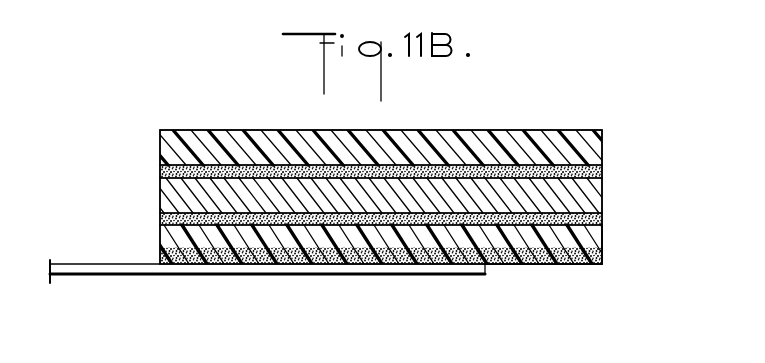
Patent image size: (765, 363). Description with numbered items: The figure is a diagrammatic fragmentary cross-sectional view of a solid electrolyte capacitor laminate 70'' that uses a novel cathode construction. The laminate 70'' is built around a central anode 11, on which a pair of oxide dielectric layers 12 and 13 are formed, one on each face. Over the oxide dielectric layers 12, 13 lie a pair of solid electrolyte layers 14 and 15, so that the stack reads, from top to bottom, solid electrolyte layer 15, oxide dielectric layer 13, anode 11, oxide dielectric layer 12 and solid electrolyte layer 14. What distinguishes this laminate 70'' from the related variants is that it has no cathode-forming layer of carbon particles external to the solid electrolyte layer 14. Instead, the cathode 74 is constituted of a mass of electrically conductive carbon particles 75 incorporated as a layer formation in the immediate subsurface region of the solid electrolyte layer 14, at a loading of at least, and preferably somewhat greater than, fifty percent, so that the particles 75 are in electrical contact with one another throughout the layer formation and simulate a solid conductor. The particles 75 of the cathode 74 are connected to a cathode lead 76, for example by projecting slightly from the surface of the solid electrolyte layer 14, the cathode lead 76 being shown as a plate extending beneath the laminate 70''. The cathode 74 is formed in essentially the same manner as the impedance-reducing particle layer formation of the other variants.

The laminate 70'' is at (381, 175).
The solid electrolyte layer 15 is at (160, 143).
The oxide dielectric layer 13 is at (158, 172).
The anode 11 is at (160, 192).
The oxide dielectric layer 12 is at (160, 218).
The solid electrolyte layer 14 is at (160, 237).
The carbon particles 75 is at (595, 252).
The cathode 74 is at (563, 265).
The cathode lead 76 is at (263, 275).